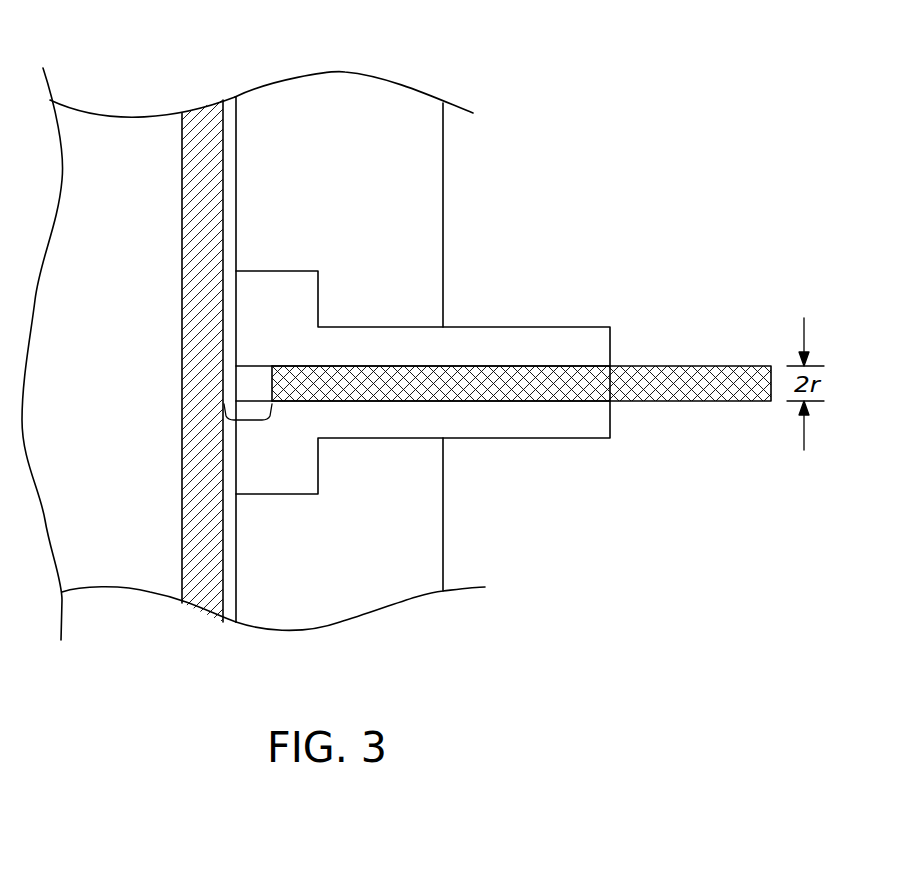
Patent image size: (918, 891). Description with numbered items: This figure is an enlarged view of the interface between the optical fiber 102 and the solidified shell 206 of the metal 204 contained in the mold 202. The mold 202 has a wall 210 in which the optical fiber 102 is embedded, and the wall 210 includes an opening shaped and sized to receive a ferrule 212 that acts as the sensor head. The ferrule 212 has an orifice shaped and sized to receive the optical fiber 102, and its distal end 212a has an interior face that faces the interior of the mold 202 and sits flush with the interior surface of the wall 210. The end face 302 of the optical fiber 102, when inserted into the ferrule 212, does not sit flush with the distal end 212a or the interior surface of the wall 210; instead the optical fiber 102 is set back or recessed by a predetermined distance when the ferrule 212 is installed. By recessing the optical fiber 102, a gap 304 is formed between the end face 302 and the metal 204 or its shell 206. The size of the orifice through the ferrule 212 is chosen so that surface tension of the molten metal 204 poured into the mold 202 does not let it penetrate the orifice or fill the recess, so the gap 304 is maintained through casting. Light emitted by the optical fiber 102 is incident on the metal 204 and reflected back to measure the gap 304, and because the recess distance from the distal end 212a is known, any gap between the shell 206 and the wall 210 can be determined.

The optical fiber 102 is at (738, 366).
The mold 202 is at (362, 206).
The metal 204 is at (121, 283).
The solidified shell 206 is at (205, 122).
The wall 210 is at (443, 185).
The ferrule 212 is at (580, 438).
The distal end 212a is at (236, 488).
The end face 302 is at (272, 383).
The gap 304 is at (247, 420).